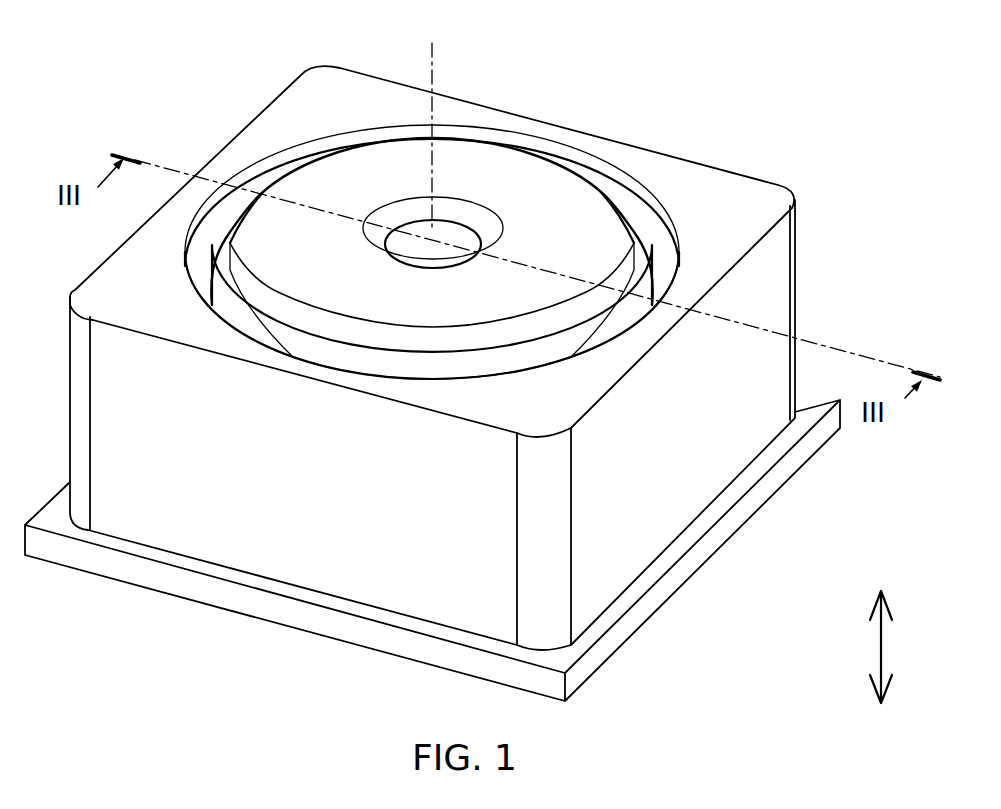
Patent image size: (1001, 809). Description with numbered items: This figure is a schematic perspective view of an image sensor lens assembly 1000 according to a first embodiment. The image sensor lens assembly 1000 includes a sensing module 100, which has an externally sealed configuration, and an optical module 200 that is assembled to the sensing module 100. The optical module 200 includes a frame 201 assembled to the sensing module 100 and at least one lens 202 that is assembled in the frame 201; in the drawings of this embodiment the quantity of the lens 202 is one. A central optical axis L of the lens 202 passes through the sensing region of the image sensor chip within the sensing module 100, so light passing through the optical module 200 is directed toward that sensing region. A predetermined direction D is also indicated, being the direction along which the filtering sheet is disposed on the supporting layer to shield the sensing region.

The image sensor lens assembly 1000 is at (432, 385).
The sensing module 100 is at (678, 594).
The optical module 200 is at (437, 362).
The frame 201 is at (297, 115).
The lens 202 is at (592, 208).
The central optical axis L is at (433, 70).
The predetermined direction D is at (866, 647).